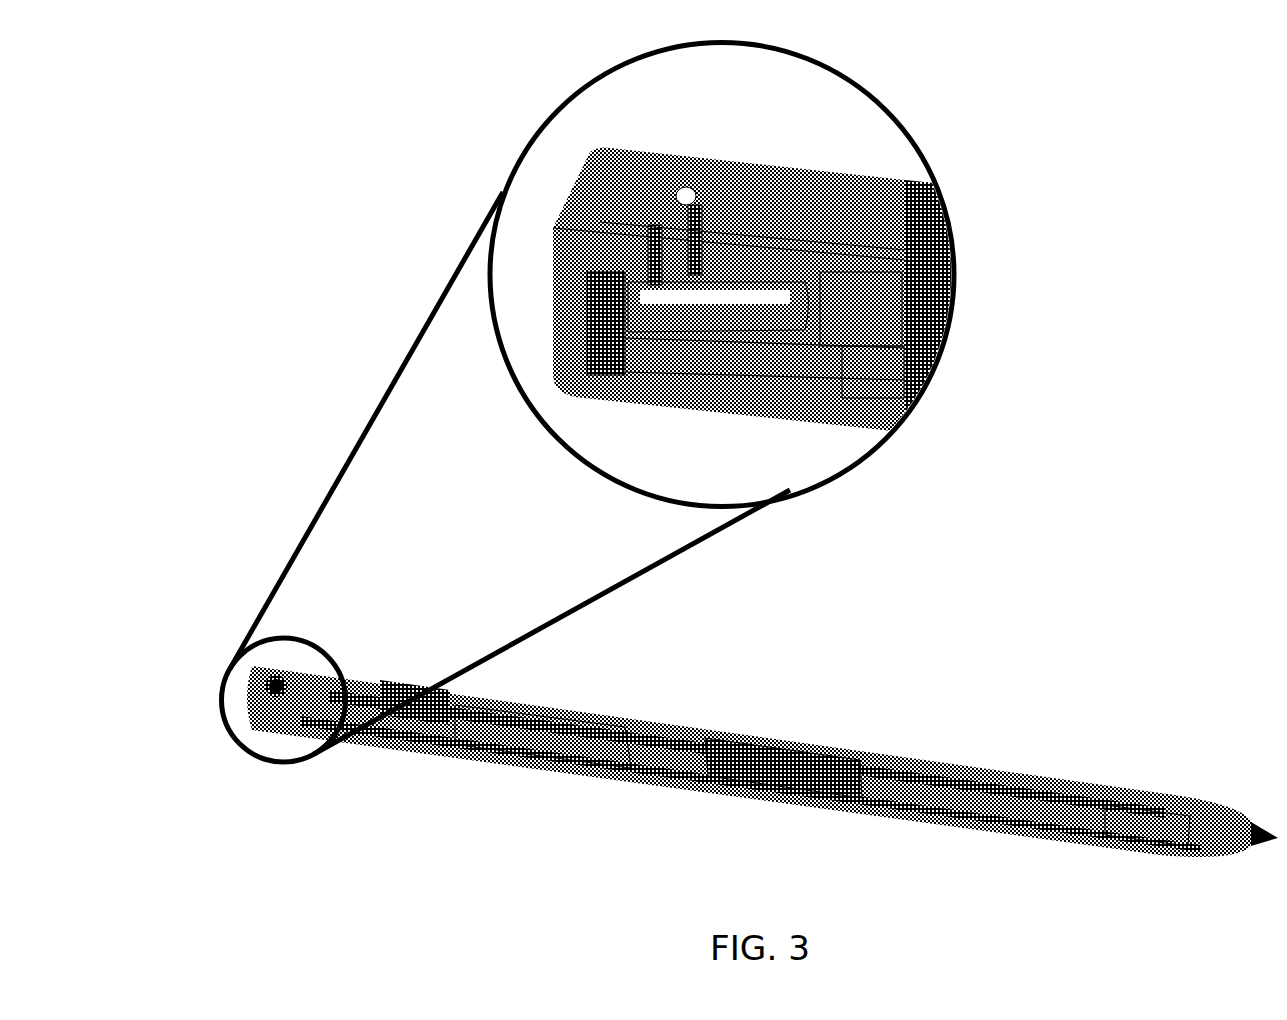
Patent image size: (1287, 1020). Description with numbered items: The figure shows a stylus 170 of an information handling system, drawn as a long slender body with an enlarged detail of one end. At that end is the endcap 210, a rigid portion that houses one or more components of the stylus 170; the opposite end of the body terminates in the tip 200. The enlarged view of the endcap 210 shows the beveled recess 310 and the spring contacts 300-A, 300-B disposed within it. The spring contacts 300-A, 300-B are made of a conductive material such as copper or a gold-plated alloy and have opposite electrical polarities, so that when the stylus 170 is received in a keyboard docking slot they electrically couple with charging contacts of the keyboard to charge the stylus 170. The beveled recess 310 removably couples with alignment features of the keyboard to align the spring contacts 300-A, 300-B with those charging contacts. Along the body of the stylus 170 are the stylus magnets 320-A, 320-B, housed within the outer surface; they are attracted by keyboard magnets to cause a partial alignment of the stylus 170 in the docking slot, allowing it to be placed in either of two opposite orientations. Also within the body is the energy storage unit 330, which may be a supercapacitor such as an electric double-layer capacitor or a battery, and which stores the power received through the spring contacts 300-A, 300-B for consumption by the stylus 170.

The stylus 170 is at (989, 709).
The tip 200 is at (1263, 812).
The endcap 210 is at (556, 88).
The spring contact 300-A is at (657, 236).
The spring contact 300-B is at (694, 203).
The beveled recess 310 is at (691, 176).
The stylus magnet 320-A is at (398, 676).
The stylus magnet 320-B is at (776, 732).
The energy storage unit 330 is at (585, 728).